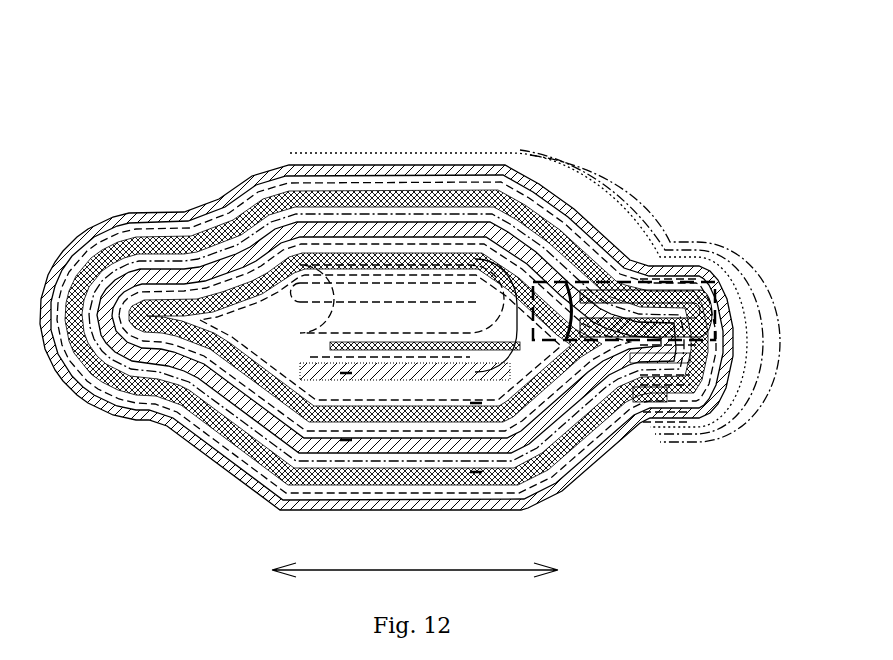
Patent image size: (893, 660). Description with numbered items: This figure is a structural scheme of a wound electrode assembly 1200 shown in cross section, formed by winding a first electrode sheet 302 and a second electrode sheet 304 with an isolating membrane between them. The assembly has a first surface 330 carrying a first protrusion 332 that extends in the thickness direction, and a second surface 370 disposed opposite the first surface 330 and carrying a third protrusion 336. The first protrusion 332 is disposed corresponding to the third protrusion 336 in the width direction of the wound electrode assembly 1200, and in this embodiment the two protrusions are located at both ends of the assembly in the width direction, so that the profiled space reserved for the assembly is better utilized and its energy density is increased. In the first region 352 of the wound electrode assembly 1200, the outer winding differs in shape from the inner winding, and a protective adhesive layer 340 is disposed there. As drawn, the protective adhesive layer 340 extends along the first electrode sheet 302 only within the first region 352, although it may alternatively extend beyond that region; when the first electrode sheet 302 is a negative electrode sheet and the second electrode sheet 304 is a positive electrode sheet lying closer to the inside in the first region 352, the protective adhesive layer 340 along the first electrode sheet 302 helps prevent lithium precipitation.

The wound electrode assembly 1200 is at (125, 88).
The first electrode sheet 302 is at (452, 220).
The second electrode sheet 304 is at (535, 200).
The first surface 330 is at (158, 212).
The first protrusion 332 is at (250, 173).
The third protrusion 336 is at (220, 485).
The protective adhesive layer 340 is at (573, 290).
The first region 352 is at (657, 280).
The second surface 370 is at (140, 415).